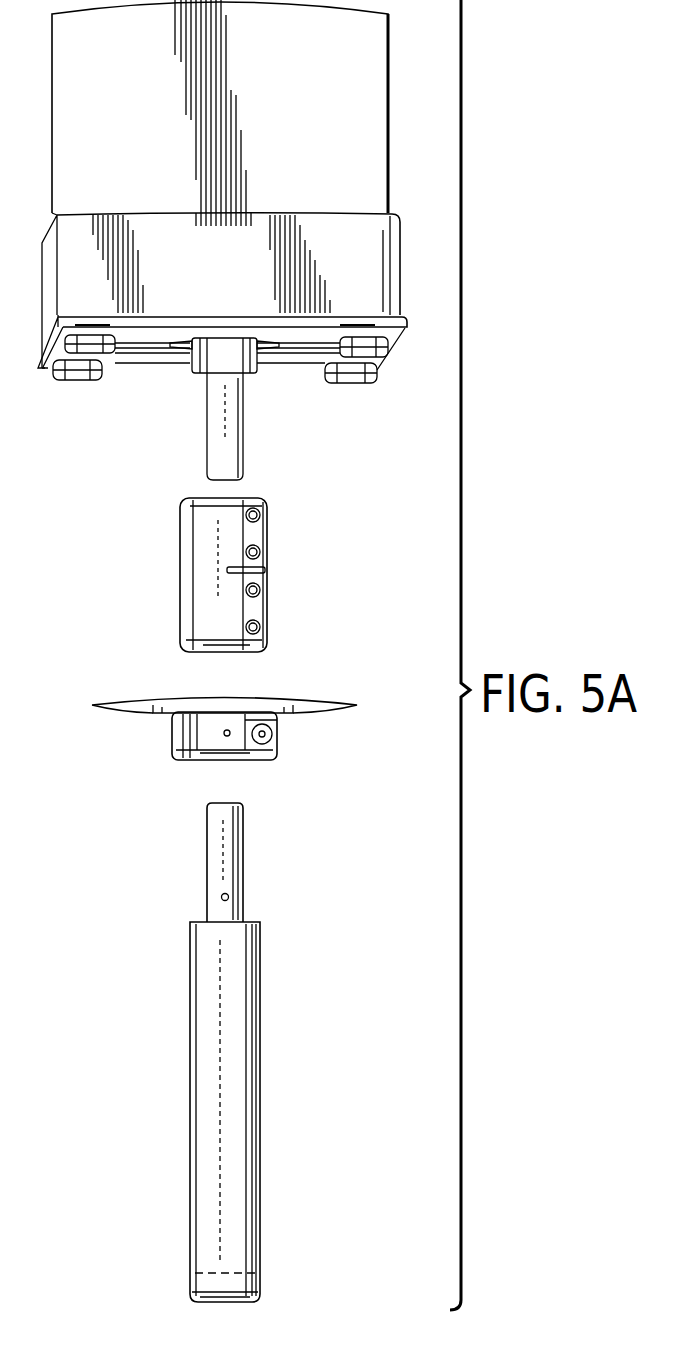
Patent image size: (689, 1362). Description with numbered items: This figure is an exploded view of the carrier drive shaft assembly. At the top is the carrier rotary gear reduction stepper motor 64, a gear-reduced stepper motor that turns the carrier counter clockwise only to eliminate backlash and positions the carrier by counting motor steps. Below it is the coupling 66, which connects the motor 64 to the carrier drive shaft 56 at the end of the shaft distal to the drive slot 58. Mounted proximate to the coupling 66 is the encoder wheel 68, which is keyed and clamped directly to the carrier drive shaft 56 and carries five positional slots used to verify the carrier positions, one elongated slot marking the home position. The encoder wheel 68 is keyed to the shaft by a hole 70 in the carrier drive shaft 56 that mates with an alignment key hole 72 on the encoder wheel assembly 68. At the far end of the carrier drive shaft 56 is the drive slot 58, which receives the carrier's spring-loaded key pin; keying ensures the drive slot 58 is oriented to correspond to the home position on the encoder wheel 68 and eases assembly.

The carrier rotary gear reduction stepper motor 64 is at (365, 114).
The coupling 66 is at (268, 542).
The encoder wheel 68 is at (318, 710).
The alignment key hole 72 is at (222, 733).
The hole 70 is at (232, 897).
The carrier drive shaft 56 is at (210, 1120).
The drive slot 58 is at (258, 1273).